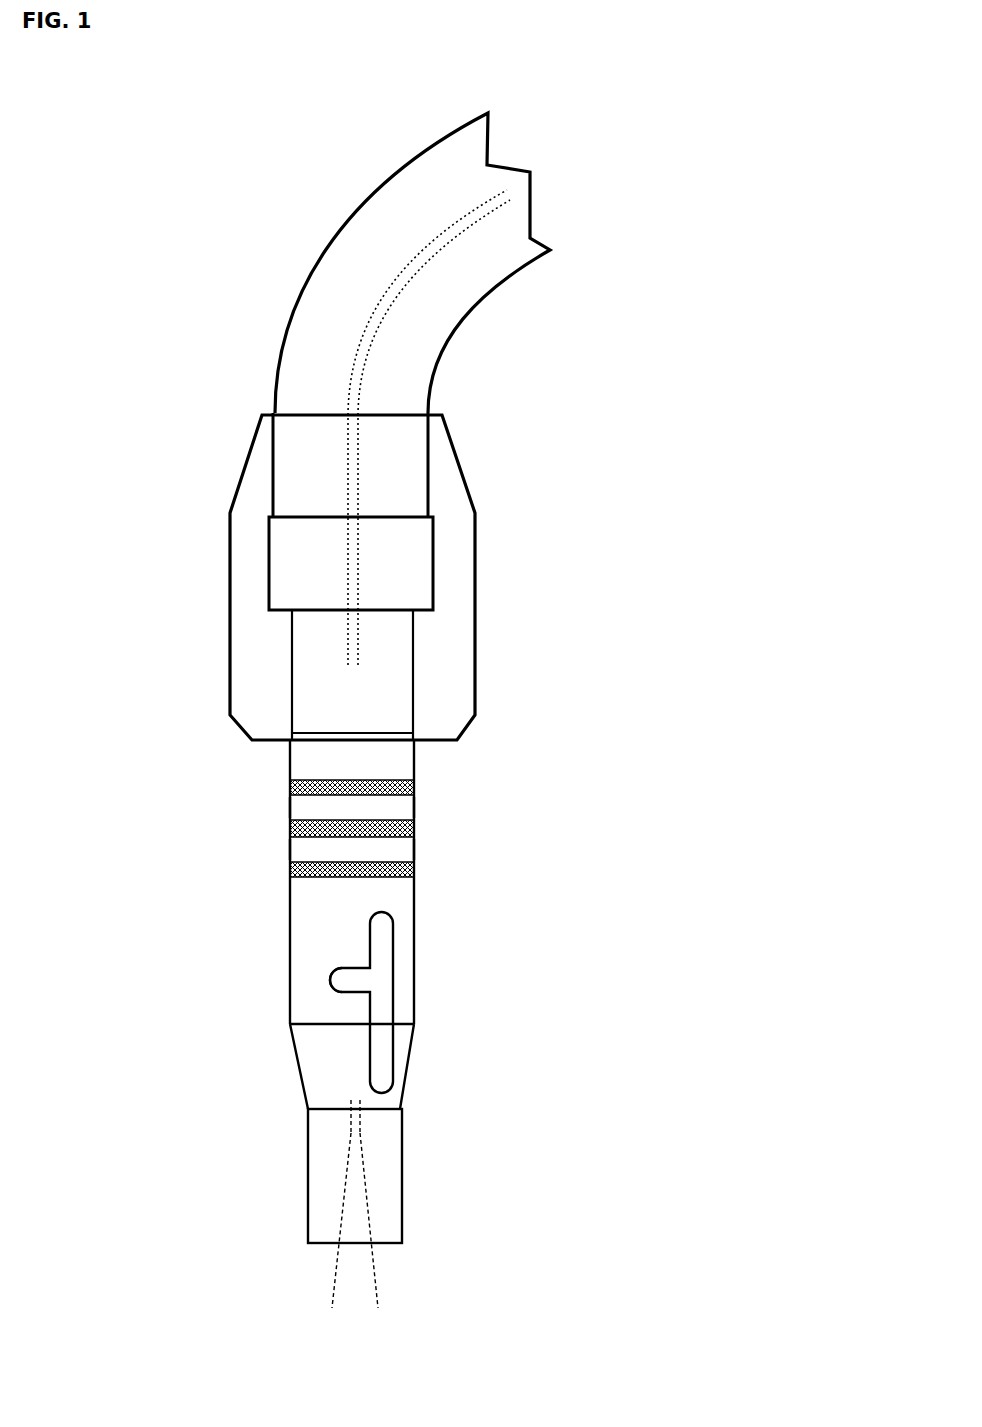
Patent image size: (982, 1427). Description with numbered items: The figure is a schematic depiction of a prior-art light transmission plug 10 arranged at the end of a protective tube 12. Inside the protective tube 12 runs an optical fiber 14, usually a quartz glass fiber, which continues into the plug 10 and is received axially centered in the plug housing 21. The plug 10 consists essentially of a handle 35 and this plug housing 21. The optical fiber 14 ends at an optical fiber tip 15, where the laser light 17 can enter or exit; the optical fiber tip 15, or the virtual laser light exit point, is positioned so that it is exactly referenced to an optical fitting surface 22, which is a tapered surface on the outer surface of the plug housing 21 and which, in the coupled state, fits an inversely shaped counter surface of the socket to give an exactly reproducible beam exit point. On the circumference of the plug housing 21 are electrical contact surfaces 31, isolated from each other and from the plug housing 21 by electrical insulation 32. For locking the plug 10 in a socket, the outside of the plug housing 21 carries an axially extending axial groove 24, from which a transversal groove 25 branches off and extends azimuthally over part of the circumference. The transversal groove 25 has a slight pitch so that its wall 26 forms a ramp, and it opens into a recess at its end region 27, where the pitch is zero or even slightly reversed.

The plug 10 is at (657, 872).
The protective tube 12 is at (338, 217).
The optical fiber 14 is at (375, 317).
The handle 35 is at (462, 662).
The plug housing 21 is at (325, 907).
The electrical contact surfaces 31 is at (305, 850).
The electrical insulation 32 is at (422, 788).
The axial groove 24 is at (382, 1012).
The transversal groove 25 is at (358, 976).
The end region 27 is at (332, 990).
The wall 26 is at (358, 998).
The optical fitting surface 22 is at (413, 1072).
The optical fiber tip 15 is at (364, 1136).
The laser light 17 is at (358, 1293).